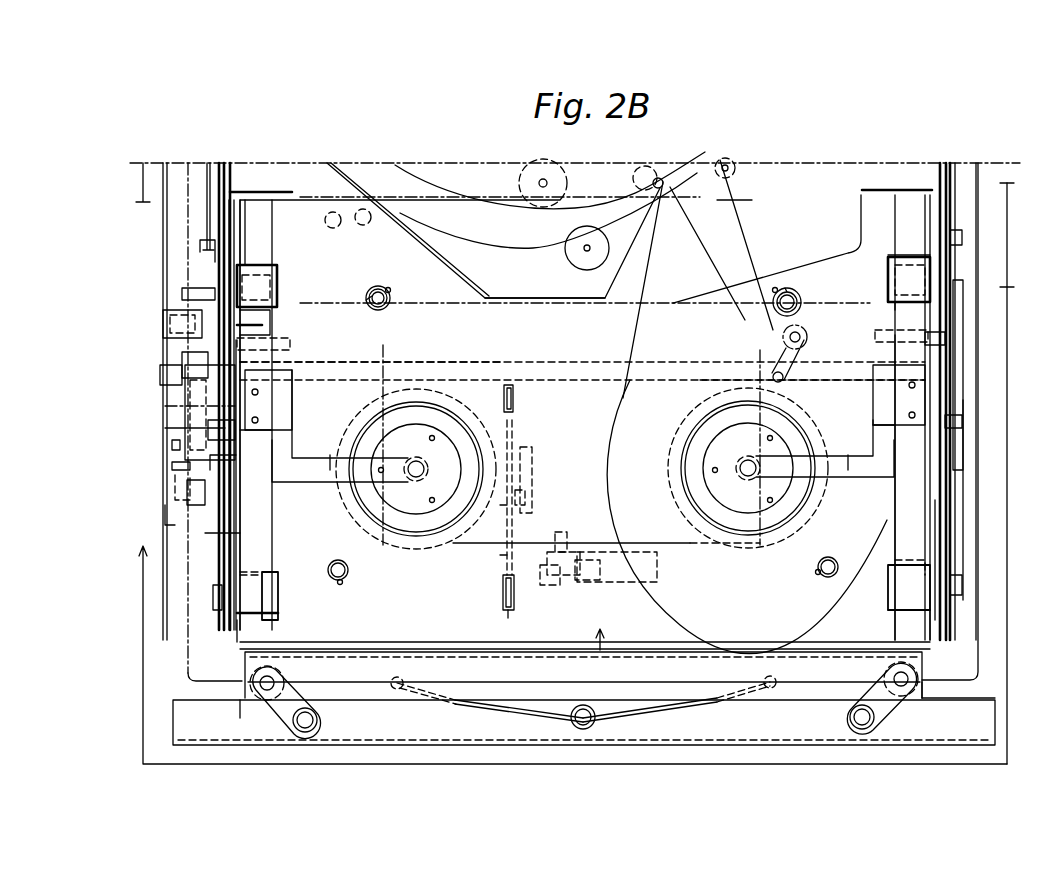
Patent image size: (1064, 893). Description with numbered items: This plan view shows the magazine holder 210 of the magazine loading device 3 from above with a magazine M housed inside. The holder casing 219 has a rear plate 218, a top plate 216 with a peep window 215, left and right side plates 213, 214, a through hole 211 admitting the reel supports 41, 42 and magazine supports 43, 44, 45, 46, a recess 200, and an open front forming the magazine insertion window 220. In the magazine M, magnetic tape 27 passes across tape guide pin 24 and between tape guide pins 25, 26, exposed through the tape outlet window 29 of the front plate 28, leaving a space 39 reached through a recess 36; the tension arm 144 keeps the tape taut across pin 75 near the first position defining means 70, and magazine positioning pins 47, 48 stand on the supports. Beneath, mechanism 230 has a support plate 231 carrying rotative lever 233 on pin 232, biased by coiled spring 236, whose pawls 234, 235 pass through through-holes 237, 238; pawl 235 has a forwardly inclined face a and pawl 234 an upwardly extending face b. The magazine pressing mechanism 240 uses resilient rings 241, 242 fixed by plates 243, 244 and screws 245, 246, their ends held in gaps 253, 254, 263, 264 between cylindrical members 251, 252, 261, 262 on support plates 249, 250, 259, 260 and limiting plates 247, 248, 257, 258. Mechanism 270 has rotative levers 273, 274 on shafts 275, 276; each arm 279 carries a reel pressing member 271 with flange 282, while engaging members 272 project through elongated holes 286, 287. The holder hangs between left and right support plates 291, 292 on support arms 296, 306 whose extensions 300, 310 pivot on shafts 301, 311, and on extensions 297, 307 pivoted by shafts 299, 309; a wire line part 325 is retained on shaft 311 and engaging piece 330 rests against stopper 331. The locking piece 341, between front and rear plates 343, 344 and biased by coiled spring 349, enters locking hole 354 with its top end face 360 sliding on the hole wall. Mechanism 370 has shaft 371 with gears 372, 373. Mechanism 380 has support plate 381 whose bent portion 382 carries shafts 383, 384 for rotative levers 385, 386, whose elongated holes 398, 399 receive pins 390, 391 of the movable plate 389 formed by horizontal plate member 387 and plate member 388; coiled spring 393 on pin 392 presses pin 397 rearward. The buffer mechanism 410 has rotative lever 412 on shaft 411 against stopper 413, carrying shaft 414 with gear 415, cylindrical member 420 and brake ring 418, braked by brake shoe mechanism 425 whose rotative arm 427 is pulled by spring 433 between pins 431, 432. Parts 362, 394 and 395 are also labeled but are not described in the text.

The magazine loading device 3 is at (140, 281).
The tape guide pin 24 is at (684, 290).
The tape guide pin 25 is at (365, 225).
The tape guide pin 26 is at (326, 225).
The magnetic tape 27 is at (482, 213).
The front plate 28 is at (399, 190).
The magnetic tape outlet window 29 is at (444, 197).
The recess 36 is at (556, 300).
The space 39 is at (552, 208).
The reel support 41 is at (423, 425).
The reel support 42 is at (690, 455).
The magazine support 43 is at (378, 289).
The magazine support 44 is at (785, 288).
The magazine support 45 is at (345, 563).
The magazine support 46 is at (832, 558).
The magazine positioning pin 47 is at (366, 302).
The magazine positioning pin 48 is at (801, 305).
The first position defining means 70 is at (572, 191).
The pin 75 is at (640, 178).
The tension arm 144 is at (712, 240).
The recess 200 is at (462, 278).
The magazine holder 210 is at (982, 626).
The through hole 211 is at (390, 290).
The left side plate 213 is at (222, 558).
The right side plate 214 is at (935, 548).
The peep window 215 is at (636, 303).
The top plate 216 is at (976, 205).
The rear plate 218 is at (283, 192).
The casing 219 is at (861, 215).
The magazine insertion window 220 is at (602, 650).
The mechanism 230 is at (534, 486).
The support plate 231 is at (530, 450).
The pin 232 is at (505, 506).
The rotative lever 233 is at (506, 555).
The pawl 234 is at (514, 405).
The pawl 235 is at (516, 598).
The coiled spring 236 is at (530, 500).
The through-hole 237 is at (515, 388).
The through-hole 238 is at (512, 621).
The magazine pressing mechanism 240 is at (277, 527).
The resilient ring 241 is at (270, 320).
The resilient ring 242 is at (895, 326).
The plate 243 is at (253, 440).
The plate 244 is at (885, 430).
The screw 245 is at (270, 415).
The screw 246 is at (908, 415).
The limiting plate 247 is at (262, 266).
The limiting plate 248 is at (258, 621).
The support plate 249 is at (277, 275).
The support plate 250 is at (278, 583).
The cylindrical member 251 is at (270, 296).
The cylindrical member 252 is at (264, 575).
The gap 253 is at (245, 262).
The gap 254 is at (278, 613).
The limiting plate 257 is at (905, 255).
The limiting plate 258 is at (910, 640).
The support plate 259 is at (892, 284).
The support plate 260 is at (888, 583).
The cylindrical member 261 is at (890, 300).
The cylindrical member 262 is at (900, 562).
The gap 263 is at (890, 264).
The gap 264 is at (895, 602).
The mechanism 270 is at (302, 502).
The reel pressing member 271 is at (412, 462).
The engaging member 272 is at (905, 352).
The rotative lever 273 is at (292, 395).
The rotative lever 274 is at (900, 392).
The shaft 275 is at (285, 380).
The shaft 276 is at (872, 378).
The arm 279 is at (588, 453).
The flange 282 is at (425, 470).
The vertically elongated hole 286 is at (252, 317).
The vertically elongated hole 287 is at (930, 340).
The left support plate 291 is at (163, 235).
The right support plate 292 is at (938, 166).
The support arm 296 is at (232, 185).
The extension 297 is at (207, 203).
The shaft 299 is at (199, 259).
The extension 300 is at (229, 533).
The shaft 301 is at (213, 590).
The support arm 306 is at (950, 268).
The extension 307 is at (958, 200).
The shaft 309 is at (962, 238).
The extension 310 is at (963, 508).
The shaft 311 is at (962, 583).
The line part 325 is at (238, 490).
The engaging piece 330 is at (200, 290).
The stopper 331 is at (170, 305).
The locking piece 341 is at (514, 580).
The front plate 343 is at (632, 585).
The rear plate 344 is at (638, 552).
The coiled spring 349 is at (578, 583).
The locking hole 354 is at (547, 560).
The top end face 360 is at (402, 682).
The spring 362 is at (567, 535).
The mechanism 370 is at (181, 400).
The shaft 371 is at (160, 378).
The gear 372 is at (206, 427).
The gear 373 is at (962, 420).
The mechanism 380 is at (697, 765).
The support plate 381 is at (238, 745).
The bent portion 382 is at (984, 700).
The shaft 383 is at (318, 722).
The shaft 384 is at (850, 717).
The rotative lever 385 is at (265, 706).
The rotative lever 386 is at (882, 700).
The horizontal plate member 387 is at (922, 665).
The plate member 388 is at (362, 655).
The movable plate 389 is at (678, 657).
The pin 390 is at (240, 682).
The pin 391 is at (915, 682).
The pin 392 is at (583, 730).
The coiled spring 393 is at (480, 708).
The link 394 is at (420, 702).
The link 395 is at (700, 703).
The pin 397 is at (768, 677).
The elongated hole 398 is at (280, 686).
The elongated hole 399 is at (895, 680).
The buffer mechanism 410 is at (134, 404).
The shaft 411 is at (175, 322).
The rotative lever 412 is at (176, 427).
The stopper 413 is at (168, 508).
The shaft 414 is at (183, 407).
The gear 415 is at (232, 462).
The brake ring 418 is at (182, 357).
The cylindrical member 420 is at (215, 533).
The brake shoe mechanism 425 is at (178, 487).
The rotative arm 427 is at (190, 505).
The pin 431 is at (150, 548).
The pin 432 is at (172, 447).
The spring 433 is at (172, 467).
The magazine M is at (797, 204).
The forwardly inclined face a is at (505, 596).
The upwardly extending face b is at (504, 403).